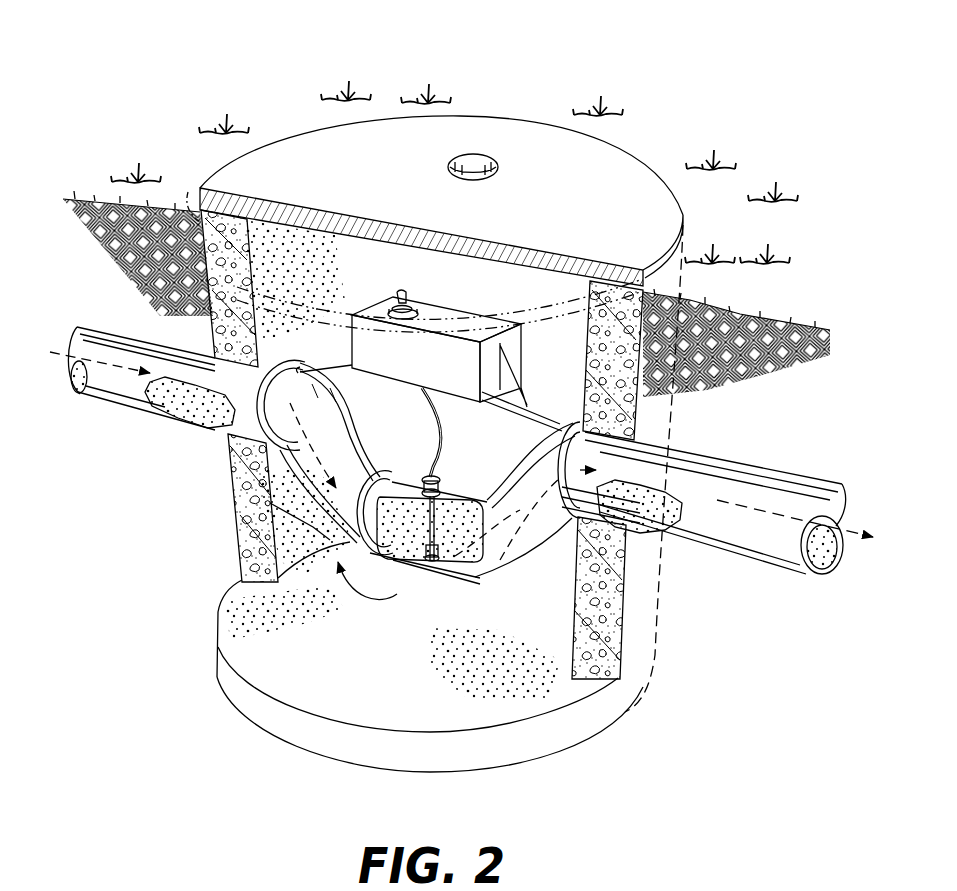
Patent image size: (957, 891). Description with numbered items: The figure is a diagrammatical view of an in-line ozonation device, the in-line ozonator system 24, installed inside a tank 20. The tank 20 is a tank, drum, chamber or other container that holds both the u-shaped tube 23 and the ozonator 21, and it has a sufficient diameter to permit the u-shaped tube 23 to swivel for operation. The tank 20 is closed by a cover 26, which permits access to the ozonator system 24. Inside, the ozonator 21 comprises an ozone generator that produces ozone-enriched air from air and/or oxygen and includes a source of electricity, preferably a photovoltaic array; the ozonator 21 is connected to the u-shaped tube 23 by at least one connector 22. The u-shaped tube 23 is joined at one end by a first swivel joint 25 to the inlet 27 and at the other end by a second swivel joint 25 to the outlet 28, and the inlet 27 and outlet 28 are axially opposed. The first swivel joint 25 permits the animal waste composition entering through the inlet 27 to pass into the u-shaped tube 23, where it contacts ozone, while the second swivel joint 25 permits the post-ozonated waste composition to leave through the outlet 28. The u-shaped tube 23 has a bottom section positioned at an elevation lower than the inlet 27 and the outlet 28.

The tank 20 is at (200, 457).
The ozonator 21 is at (381, 303).
The connector 22 is at (350, 366).
The u-shaped tube 23 is at (503, 574).
The in-line ozonator system 24 is at (266, 92).
The swivel joint 25 is at (263, 393).
The cover 26 is at (497, 133).
The inlet 27 is at (107, 323).
The outlet 28 is at (747, 463).